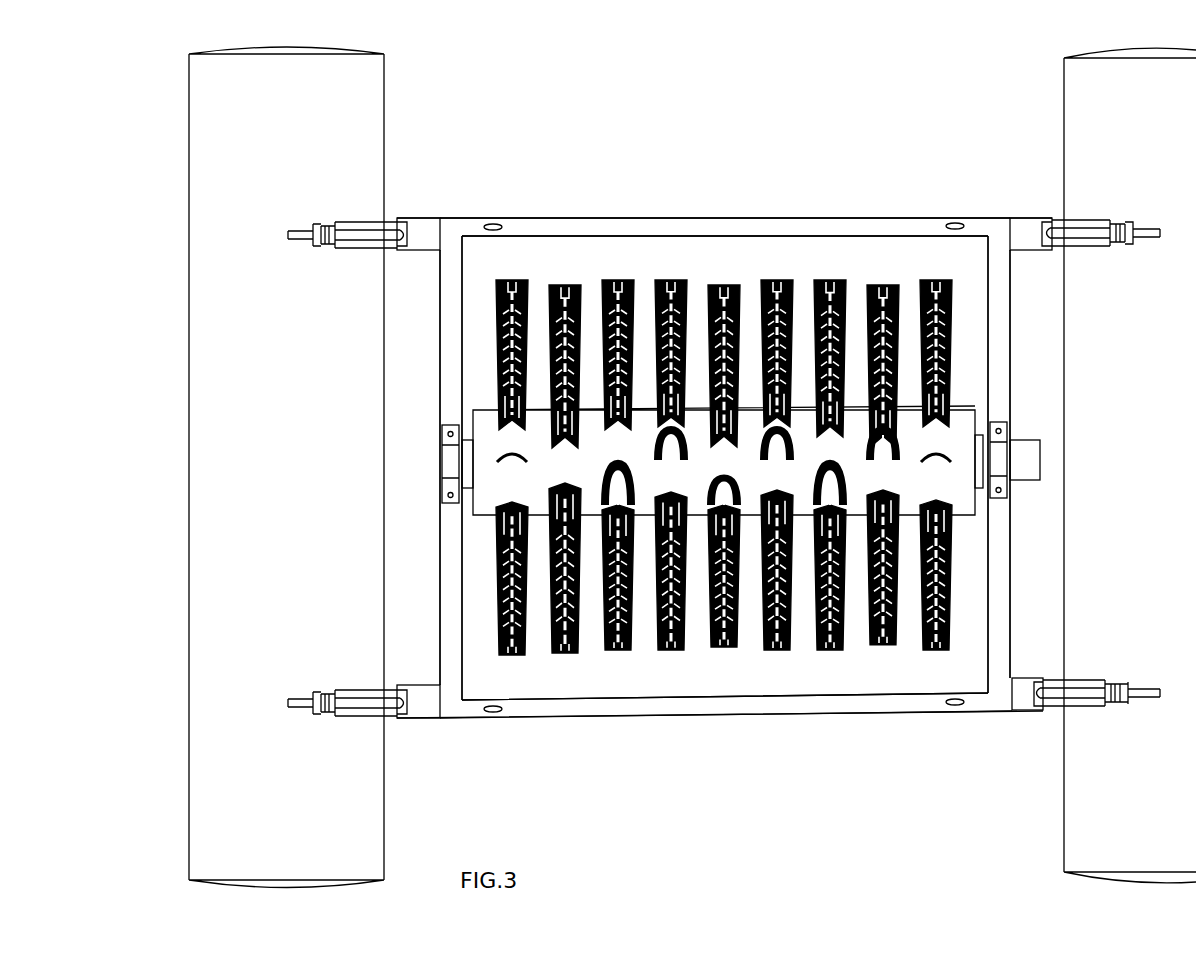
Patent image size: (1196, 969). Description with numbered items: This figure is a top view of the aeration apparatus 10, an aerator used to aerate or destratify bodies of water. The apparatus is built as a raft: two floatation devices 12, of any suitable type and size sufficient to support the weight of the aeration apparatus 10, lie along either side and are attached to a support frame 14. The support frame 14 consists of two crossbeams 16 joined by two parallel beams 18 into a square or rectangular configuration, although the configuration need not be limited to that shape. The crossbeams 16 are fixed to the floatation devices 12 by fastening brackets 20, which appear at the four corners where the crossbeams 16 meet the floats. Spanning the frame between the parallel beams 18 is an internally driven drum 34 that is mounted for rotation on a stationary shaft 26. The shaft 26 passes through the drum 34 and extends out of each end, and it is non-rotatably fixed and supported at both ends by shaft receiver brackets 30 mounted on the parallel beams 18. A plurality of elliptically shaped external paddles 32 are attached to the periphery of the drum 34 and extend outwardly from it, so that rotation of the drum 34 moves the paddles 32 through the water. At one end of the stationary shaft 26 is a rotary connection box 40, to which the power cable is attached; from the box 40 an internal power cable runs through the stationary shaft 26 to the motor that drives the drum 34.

The aeration apparatus 10 is at (898, 70).
The floatation devices 12 is at (384, 126).
The support frame 14 is at (528, 727).
The crossbeams 16 is at (628, 222).
The parallel beams 18 is at (440, 302).
The fastening brackets 20 is at (405, 212).
The stationary shaft 26 is at (456, 474).
The shaft receiver brackets 30 is at (447, 462).
The external paddles 32 is at (778, 280).
The internally driven drum 34 is at (490, 520).
The rotary connection box 40 is at (1031, 428).